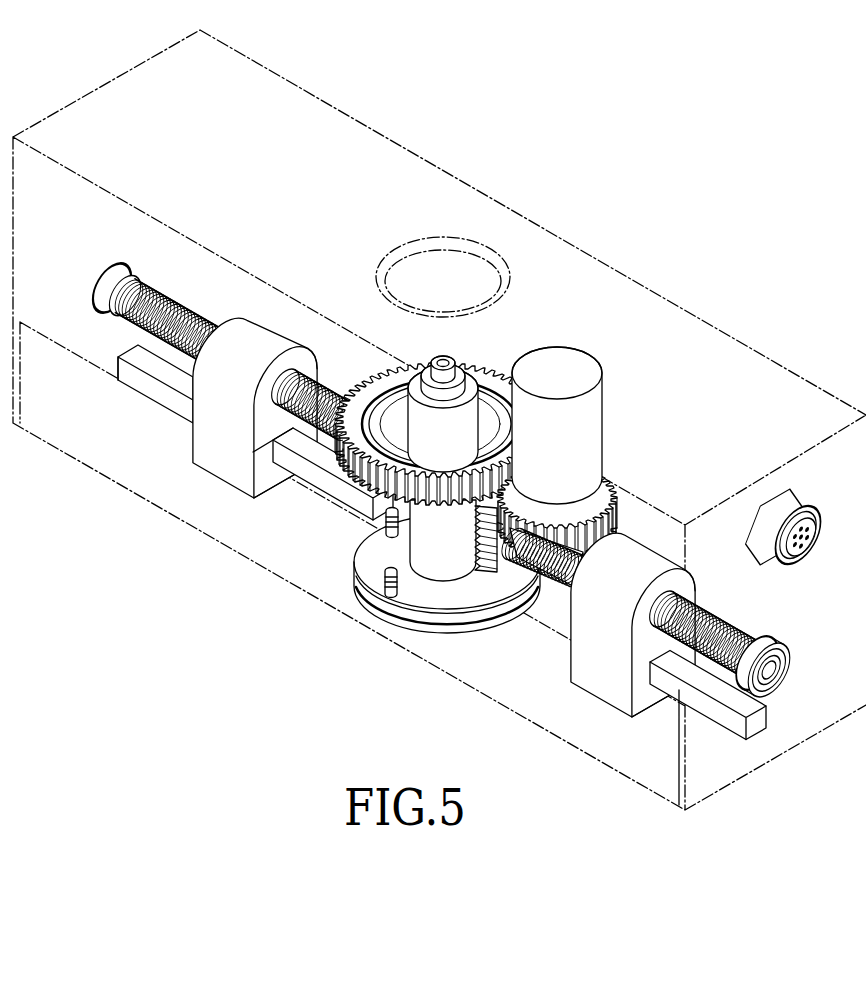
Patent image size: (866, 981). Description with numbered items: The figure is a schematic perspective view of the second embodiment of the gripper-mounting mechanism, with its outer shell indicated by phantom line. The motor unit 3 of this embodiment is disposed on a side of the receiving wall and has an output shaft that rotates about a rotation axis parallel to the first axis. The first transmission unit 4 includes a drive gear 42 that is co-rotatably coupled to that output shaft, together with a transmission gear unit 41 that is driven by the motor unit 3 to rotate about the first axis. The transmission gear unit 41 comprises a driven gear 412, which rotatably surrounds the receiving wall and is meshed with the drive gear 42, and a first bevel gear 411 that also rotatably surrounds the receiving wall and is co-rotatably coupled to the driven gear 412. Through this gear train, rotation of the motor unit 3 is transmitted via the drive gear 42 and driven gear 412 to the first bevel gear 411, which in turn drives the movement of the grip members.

The motor unit 3 is at (608, 435).
The first transmission unit 4 is at (432, 438).
The transmission gear unit 41 is at (484, 370).
The first bevel gear 411 is at (433, 507).
The driven gear 412 is at (373, 457).
The drive gear 42 is at (547, 552).